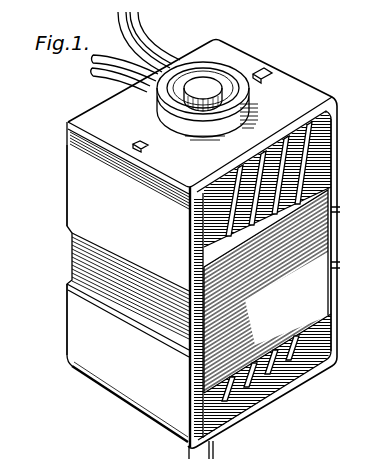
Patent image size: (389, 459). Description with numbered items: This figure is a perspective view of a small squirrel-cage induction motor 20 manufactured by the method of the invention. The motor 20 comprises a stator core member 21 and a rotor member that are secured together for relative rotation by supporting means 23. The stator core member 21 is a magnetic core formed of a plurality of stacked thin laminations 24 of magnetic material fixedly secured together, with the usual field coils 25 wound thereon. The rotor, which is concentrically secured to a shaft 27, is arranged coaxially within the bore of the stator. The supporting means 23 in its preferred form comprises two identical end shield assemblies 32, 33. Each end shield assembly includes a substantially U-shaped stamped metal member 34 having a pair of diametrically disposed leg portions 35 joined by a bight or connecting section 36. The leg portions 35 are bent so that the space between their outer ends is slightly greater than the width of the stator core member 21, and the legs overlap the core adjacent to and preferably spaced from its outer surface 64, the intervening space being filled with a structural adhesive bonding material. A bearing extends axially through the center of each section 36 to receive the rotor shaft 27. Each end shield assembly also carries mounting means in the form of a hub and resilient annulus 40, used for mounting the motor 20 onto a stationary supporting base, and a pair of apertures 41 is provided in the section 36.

The motor 20 is at (338, 400).
The stator core member 21 is at (311, 280).
The supporting means 23 is at (65, 292).
The laminations 24 is at (324, 225).
The field coils 25 is at (304, 150).
The shaft 27 is at (214, 454).
The end shield assembly 32 is at (133, 367).
The end shield assembly 33 is at (143, 219).
The U-shaped stamped metal member 34 is at (97, 110).
The leg portions 35 is at (76, 171).
The bight or connecting section 36 is at (246, 58).
The hub and resilient annulus 40 is at (196, 85).
The apertures 41 is at (138, 141).
The outer surface 64 is at (333, 248).